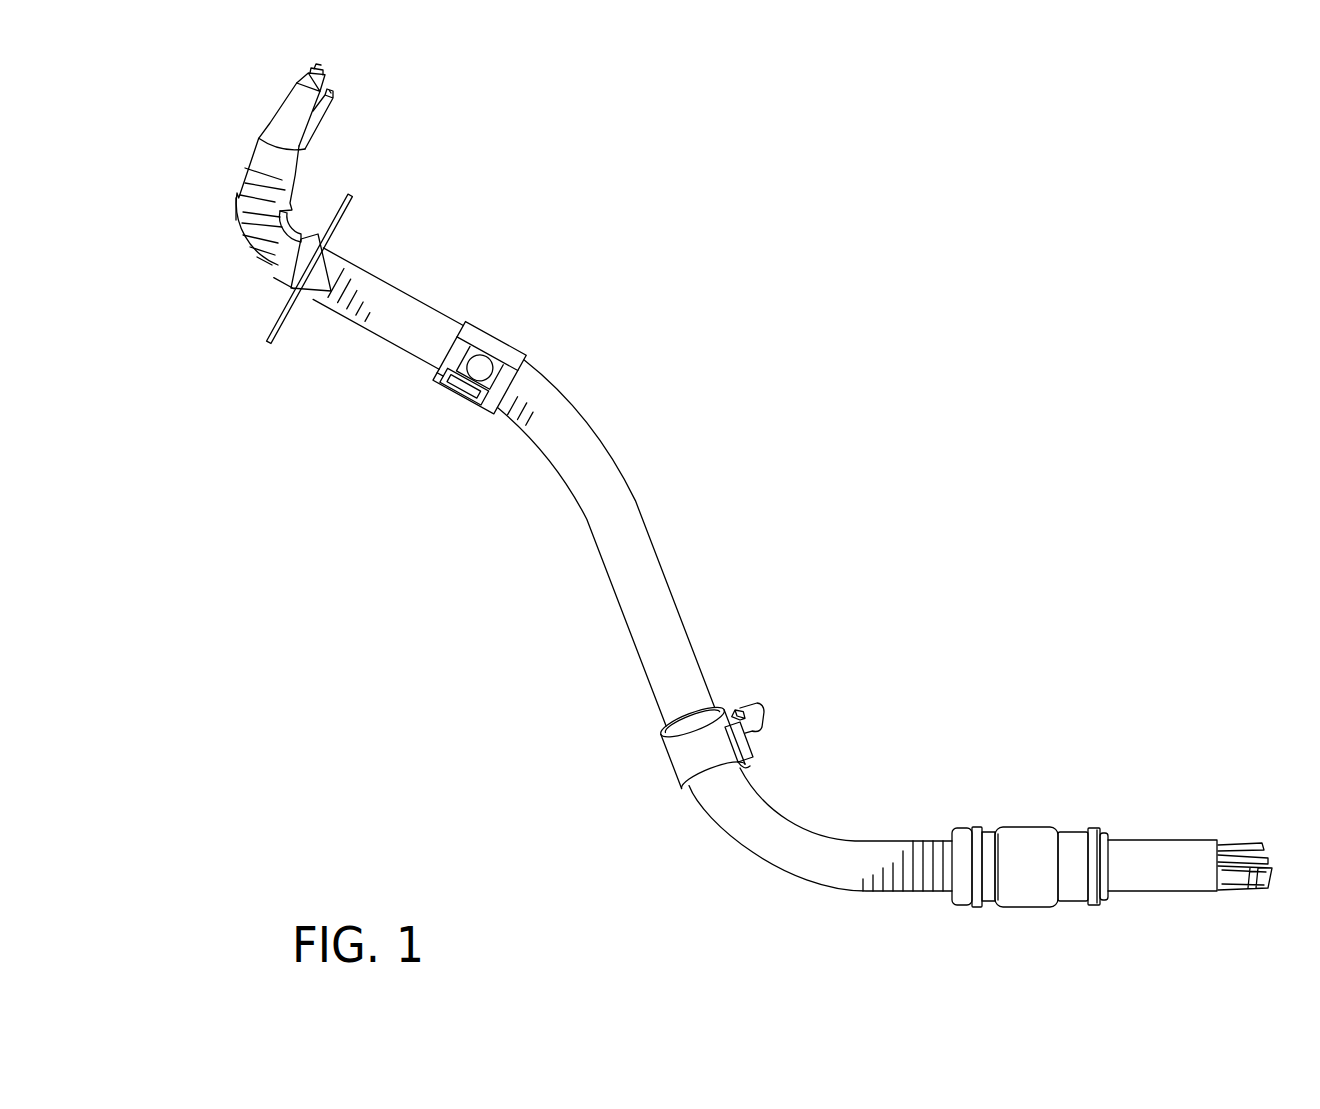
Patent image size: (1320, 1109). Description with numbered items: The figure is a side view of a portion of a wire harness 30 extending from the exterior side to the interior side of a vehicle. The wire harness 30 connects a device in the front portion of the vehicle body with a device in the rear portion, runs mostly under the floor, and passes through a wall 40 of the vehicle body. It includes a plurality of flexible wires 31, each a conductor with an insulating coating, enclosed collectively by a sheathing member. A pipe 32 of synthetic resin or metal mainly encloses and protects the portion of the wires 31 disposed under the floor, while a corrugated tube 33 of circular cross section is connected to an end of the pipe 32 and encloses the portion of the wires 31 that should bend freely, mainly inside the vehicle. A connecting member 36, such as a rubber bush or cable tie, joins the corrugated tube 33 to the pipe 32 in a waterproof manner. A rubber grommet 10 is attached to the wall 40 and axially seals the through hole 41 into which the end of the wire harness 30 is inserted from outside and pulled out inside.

The grommet 10 is at (297, 270).
The wire harness 30 is at (770, 611).
The wires 31 is at (1240, 873).
The pipe 32 is at (1145, 887).
The corrugated tube 33 is at (723, 828).
The connecting member 36 is at (1023, 833).
The wall 40 is at (338, 212).
The through hole 41 is at (288, 285).